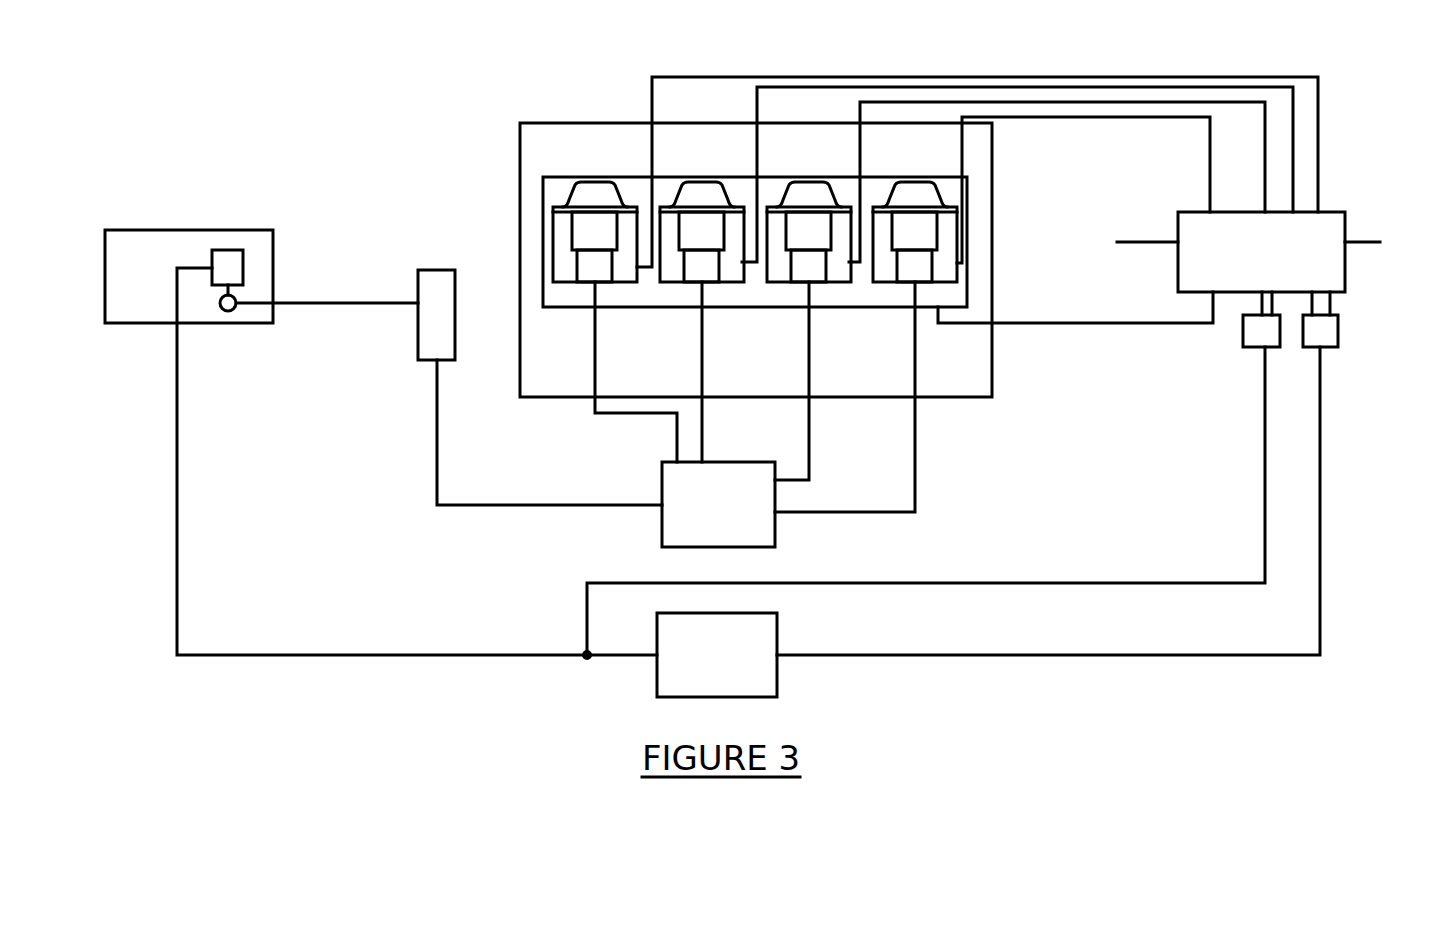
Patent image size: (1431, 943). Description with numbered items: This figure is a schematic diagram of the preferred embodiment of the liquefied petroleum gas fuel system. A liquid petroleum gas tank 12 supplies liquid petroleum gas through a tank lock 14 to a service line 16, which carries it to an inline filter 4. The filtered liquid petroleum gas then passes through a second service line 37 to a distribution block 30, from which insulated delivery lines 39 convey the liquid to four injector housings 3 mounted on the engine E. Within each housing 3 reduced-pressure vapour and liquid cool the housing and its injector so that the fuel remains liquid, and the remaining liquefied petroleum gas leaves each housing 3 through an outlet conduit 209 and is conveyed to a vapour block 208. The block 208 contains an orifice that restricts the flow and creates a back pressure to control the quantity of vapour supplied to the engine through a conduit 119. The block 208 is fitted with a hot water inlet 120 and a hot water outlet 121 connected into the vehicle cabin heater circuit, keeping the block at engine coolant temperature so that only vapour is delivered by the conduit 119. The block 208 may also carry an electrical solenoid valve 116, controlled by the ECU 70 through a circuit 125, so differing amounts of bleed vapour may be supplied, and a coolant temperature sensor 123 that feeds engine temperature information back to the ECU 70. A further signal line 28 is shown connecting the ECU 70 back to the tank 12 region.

The injector housing 3 is at (560, 272).
The inline filter 4 is at (446, 319).
The liquid petroleum gas tank 12 is at (156, 306).
The tank lock 14 is at (238, 250).
The service line 16 is at (352, 304).
The signal line 28 is at (245, 653).
The fuel rail / manifold 30 is at (724, 508).
The service line 37 is at (437, 420).
The insulated delivery lines 39 is at (520, 356).
The ECU 70 is at (724, 668).
The electrical solenoid valve 116 is at (1338, 325).
The conduit 119 is at (1062, 327).
The hot water inlet 120 is at (1150, 240).
The hot water outlet 121 is at (1362, 240).
The coolant temperature sensor 123 is at (1253, 347).
The circuit 125 is at (985, 583).
The vapour block 208 is at (1291, 264).
The outlet conduit 209 is at (1107, 115).
The engine E is at (580, 122).